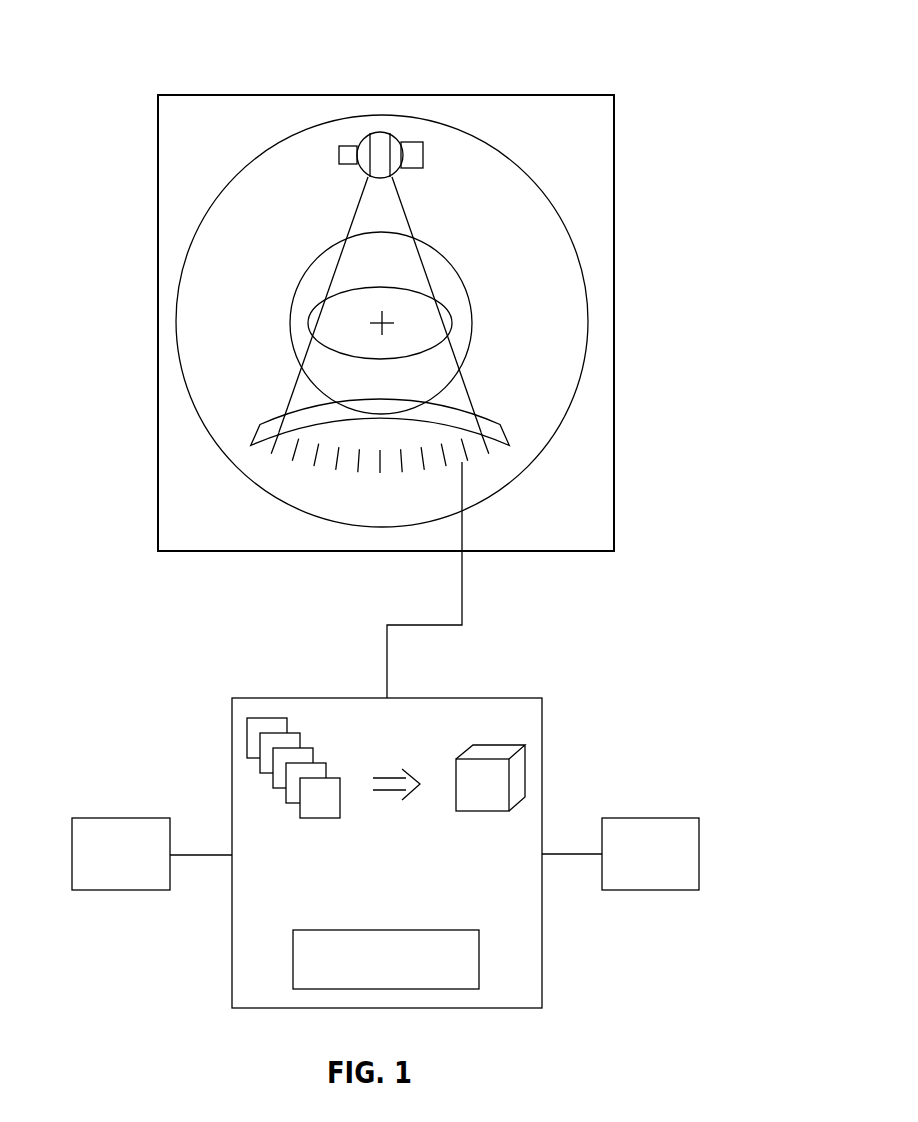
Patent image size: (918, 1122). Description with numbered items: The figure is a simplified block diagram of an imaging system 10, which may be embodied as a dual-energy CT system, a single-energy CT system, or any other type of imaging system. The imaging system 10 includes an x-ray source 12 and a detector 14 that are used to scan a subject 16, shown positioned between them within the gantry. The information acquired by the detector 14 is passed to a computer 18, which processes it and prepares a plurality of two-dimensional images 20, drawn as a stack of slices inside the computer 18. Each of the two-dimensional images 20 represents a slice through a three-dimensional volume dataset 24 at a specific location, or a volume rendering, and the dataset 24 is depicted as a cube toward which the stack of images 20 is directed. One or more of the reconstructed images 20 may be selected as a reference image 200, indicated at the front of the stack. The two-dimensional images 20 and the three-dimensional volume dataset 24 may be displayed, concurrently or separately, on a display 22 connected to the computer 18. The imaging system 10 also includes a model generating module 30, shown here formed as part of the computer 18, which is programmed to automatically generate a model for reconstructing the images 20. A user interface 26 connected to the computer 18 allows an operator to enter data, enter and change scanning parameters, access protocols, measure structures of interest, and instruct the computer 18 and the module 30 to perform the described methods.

The imaging system 10 is at (112, 38).
The x-ray source 12 is at (385, 132).
The detector 14 is at (490, 427).
The subject 16 is at (312, 318).
The computer 18 is at (292, 697).
The two-dimensional images 20 is at (261, 793).
The reference image 200 is at (320, 798).
The display 22 is at (657, 818).
The 3D volume dataset 24 is at (491, 752).
The user interface 26 is at (130, 818).
The model generating module 30 is at (346, 930).